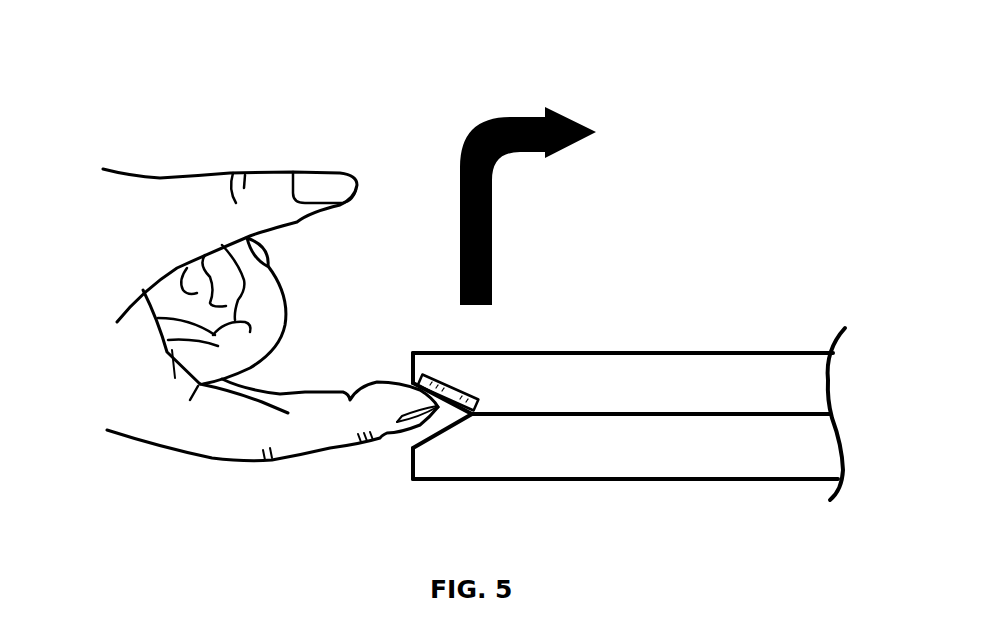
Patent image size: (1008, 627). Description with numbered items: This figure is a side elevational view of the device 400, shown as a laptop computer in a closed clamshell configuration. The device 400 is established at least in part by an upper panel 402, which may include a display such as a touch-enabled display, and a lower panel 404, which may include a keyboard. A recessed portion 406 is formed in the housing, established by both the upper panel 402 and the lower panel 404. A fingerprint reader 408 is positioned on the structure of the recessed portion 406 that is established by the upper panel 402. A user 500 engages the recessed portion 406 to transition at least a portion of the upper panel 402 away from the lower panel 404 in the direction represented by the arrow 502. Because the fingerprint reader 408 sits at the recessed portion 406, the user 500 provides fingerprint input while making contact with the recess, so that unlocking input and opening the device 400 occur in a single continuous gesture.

The device 400 is at (629, 360).
The upper panel 402 is at (650, 360).
The lower panel 404 is at (656, 472).
The recessed portion 406 is at (444, 433).
The fingerprint reader 408 is at (456, 388).
The user 500 is at (305, 458).
The arrow 502 is at (520, 115).